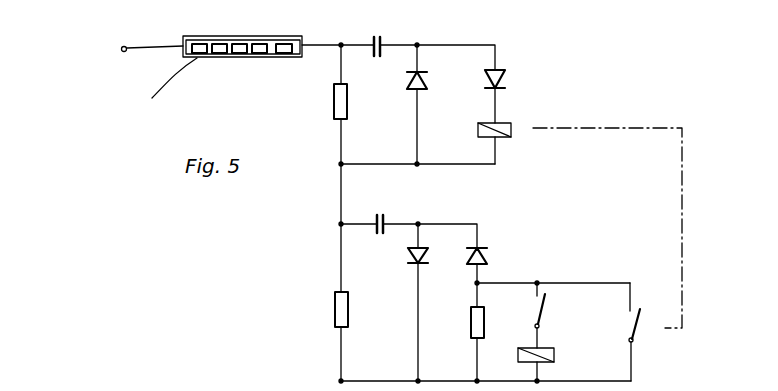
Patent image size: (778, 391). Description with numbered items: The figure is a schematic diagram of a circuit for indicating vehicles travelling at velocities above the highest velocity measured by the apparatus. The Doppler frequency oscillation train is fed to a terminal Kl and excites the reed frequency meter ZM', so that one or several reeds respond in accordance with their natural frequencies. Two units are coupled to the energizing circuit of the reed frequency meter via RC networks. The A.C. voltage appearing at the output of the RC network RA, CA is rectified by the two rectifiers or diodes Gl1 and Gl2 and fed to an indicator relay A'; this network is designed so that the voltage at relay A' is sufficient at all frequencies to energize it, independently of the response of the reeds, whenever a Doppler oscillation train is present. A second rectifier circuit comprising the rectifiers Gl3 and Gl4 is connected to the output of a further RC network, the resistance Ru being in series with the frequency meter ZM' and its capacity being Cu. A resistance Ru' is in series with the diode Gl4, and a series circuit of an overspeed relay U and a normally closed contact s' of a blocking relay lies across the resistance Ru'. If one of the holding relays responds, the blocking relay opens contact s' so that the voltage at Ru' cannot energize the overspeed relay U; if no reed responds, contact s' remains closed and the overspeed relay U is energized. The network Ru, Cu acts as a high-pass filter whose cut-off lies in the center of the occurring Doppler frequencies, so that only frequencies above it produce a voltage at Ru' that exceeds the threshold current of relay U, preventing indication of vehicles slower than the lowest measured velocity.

The terminal Kl is at (153, 39).
The reed frequency meter ZM' is at (191, 88).
The capacitor CA is at (379, 40).
The resistance RA is at (351, 101).
The rectifier Gl1 is at (430, 103).
The rectifier Gl2 is at (474, 84).
The indicator relay A' is at (580, 225).
The capacity Cu is at (379, 215).
The rectifier Gl3 is at (432, 302).
The rectifier Gl4 is at (466, 254).
The resistance Ru is at (353, 311).
The resistance Ru' is at (461, 333).
The normally closed contact of blocking relay s' is at (547, 305).
The overspeed relay U is at (543, 355).